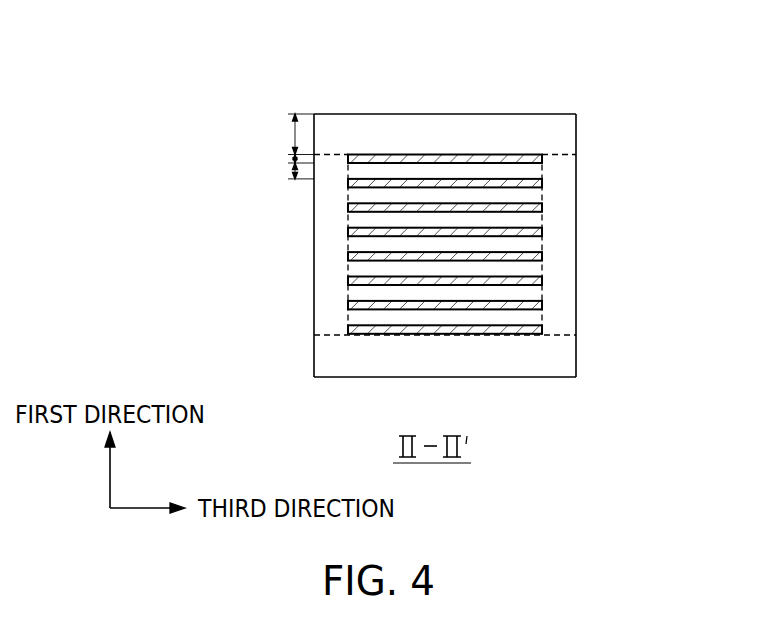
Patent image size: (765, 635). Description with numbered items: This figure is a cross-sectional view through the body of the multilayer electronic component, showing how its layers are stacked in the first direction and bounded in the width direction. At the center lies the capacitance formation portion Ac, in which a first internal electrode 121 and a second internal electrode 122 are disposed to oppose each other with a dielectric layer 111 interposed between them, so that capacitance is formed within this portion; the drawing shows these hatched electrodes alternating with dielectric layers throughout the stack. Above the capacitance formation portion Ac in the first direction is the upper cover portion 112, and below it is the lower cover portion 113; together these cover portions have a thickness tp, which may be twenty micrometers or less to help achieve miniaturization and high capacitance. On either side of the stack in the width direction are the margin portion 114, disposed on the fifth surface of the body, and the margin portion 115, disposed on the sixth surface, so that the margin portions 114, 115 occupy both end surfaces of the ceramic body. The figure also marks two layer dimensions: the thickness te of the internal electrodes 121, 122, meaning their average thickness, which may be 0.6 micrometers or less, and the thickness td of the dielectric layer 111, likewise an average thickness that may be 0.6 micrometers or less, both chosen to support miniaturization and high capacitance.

The upper cover portion 112 is at (450, 126).
The lower cover portion 113 is at (563, 357).
The margin portion 114 is at (325, 287).
The margin portion 115 is at (563, 273).
The dielectric layer 111 is at (534, 170).
The first internal electrode 121 is at (543, 156).
The second internal electrode 122 is at (537, 181).
The capacitance formation portion Ac is at (340, 247).
The thickness of the cover portions tp is at (292, 134).
The thickness of the internal electrodes te is at (288, 158).
The thickness of the dielectric layer td is at (288, 170).